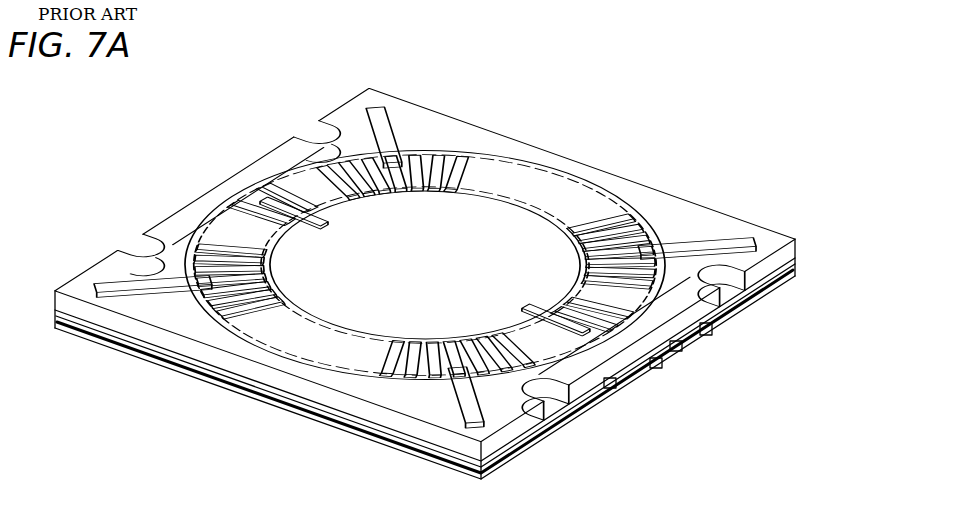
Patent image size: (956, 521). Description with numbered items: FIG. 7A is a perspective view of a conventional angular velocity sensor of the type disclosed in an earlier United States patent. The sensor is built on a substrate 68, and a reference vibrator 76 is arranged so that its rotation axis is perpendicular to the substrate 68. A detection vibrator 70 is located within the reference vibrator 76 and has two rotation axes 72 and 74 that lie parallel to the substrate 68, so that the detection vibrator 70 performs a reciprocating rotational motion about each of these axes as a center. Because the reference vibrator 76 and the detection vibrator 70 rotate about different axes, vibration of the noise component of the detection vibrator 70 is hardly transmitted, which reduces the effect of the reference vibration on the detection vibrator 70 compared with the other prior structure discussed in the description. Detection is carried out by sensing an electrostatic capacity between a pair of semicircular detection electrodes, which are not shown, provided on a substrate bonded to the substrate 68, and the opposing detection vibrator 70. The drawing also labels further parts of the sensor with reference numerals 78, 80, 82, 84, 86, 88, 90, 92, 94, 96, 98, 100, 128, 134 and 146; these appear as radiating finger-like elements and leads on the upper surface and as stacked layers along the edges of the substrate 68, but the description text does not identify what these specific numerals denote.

The substrate 68 is at (797, 243).
The detection vibrator 70 is at (438, 269).
The rotation axis 72 is at (324, 221).
The rotation axis 74 is at (556, 297).
The reference vibrator 76 is at (489, 177).
The conductive fingers 78 is at (372, 152).
The conductive fingers 80 is at (357, 160).
The lead 82 is at (382, 122).
The lead 84 is at (682, 246).
The lead 86 is at (455, 390).
The lead 88 is at (140, 279).
The groove line 90 is at (187, 250).
The substrate top surface 92 is at (202, 203).
The finger 94 is at (404, 157).
The lead end 96 is at (732, 236).
The lead end 98 is at (462, 419).
The lead end 100 is at (111, 298).
The upper layer 128 is at (573, 417).
The bottom layer 134 is at (547, 440).
The intermediate layer 146 is at (547, 430).